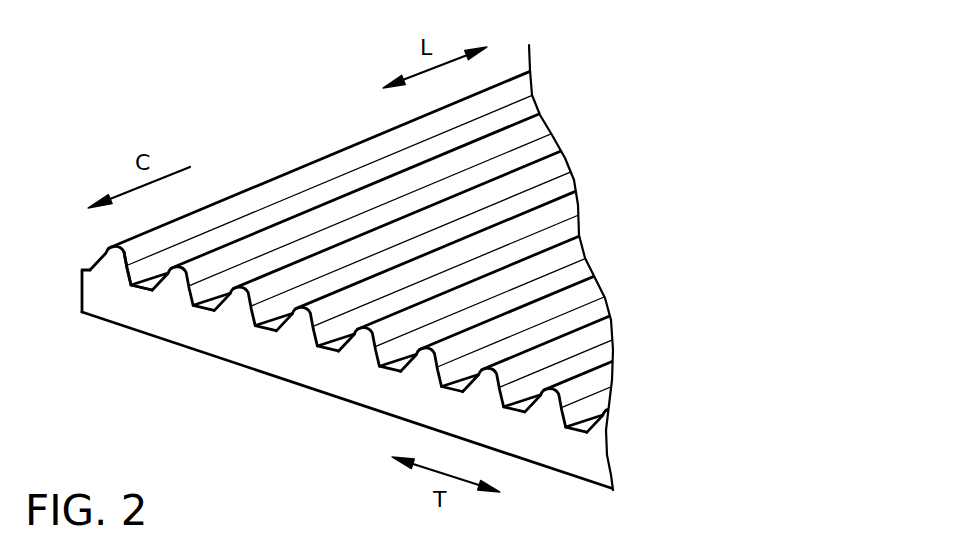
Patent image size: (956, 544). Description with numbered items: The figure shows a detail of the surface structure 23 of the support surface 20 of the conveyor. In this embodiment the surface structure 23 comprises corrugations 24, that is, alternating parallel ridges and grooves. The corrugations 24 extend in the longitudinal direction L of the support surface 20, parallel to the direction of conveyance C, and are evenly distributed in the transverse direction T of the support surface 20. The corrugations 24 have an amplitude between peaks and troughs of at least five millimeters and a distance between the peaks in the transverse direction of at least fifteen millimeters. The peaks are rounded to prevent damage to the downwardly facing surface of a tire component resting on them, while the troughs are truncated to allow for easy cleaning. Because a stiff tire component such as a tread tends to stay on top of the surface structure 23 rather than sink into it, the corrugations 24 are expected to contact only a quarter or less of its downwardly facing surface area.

The support surface 20 is at (519, 249).
The surface structure 23 is at (130, 272).
The corrugations 24 is at (427, 223).